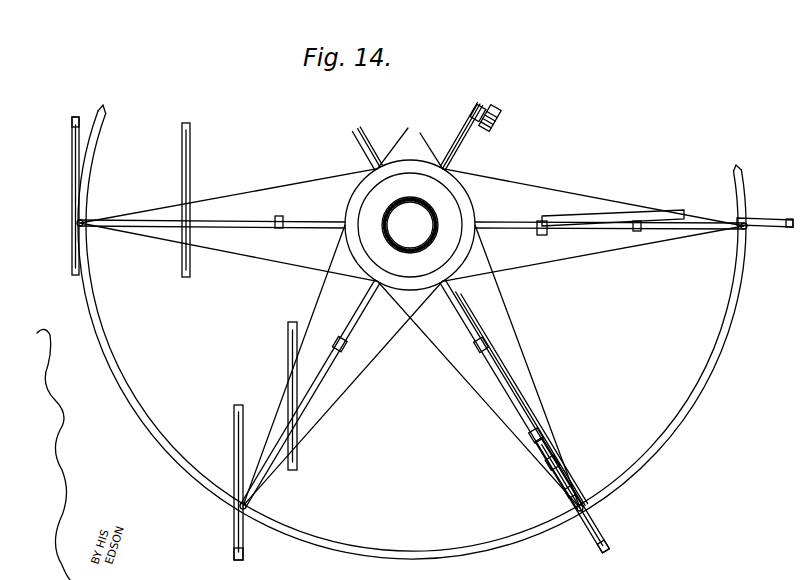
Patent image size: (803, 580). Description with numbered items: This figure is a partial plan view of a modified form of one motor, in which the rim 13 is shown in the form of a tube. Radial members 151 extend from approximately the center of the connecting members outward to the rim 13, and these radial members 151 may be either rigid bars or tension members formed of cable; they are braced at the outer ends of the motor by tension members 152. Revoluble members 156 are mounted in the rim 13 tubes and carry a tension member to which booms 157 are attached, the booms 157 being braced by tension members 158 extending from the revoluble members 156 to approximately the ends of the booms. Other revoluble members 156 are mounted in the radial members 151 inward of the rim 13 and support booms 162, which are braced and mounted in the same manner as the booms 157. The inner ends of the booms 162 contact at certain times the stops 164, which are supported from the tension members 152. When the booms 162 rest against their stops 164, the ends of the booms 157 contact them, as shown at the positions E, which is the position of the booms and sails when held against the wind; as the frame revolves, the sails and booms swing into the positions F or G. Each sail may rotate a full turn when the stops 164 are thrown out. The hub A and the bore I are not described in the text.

The rim 13 is at (127, 405).
The hub A is at (458, 187).
The hub bore I is at (436, 222).
The radial members 151 is at (264, 233).
The tension members 152 is at (218, 222).
The booms 162 is at (196, 124).
The stops 164 is at (282, 217).
The tension members 158 is at (73, 157).
The revoluble members 156 is at (84, 228).
The booms 157 is at (76, 120).
The positions E is at (631, 215).
The position F is at (172, 190).
The position G is at (318, 410).